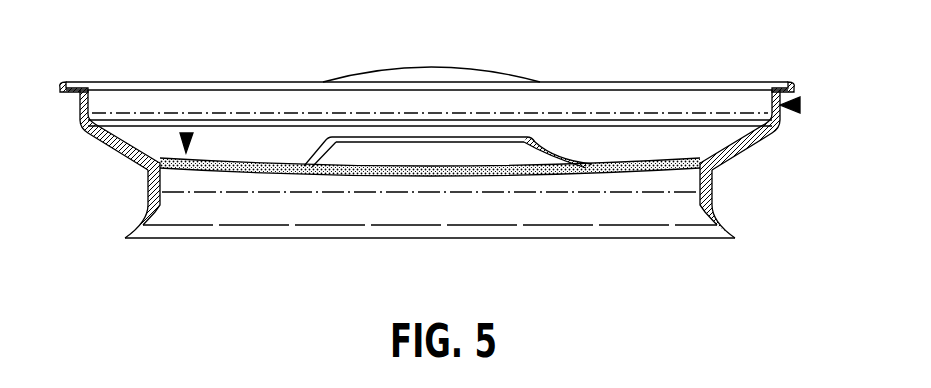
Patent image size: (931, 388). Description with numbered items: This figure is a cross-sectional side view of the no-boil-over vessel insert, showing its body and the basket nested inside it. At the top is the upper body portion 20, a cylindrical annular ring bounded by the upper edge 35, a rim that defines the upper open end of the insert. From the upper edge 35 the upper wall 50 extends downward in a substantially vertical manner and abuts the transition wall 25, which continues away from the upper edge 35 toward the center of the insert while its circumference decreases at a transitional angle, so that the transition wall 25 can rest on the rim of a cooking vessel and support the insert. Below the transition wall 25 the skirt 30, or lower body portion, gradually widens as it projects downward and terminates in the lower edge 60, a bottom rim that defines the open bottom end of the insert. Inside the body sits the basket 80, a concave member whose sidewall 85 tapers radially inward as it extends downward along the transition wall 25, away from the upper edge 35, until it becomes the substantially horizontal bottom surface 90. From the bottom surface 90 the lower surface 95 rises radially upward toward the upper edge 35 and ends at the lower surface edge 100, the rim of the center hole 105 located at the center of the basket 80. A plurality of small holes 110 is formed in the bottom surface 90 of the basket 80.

The upper body portion 20 is at (801, 106).
The transition wall 25 is at (124, 149).
The skirt 30 is at (707, 190).
The upper edge 35 is at (784, 80).
The upper wall 50 is at (82, 105).
The lower edge 60 is at (731, 241).
The basket 80 is at (188, 131).
The sidewall 85 is at (134, 150).
The bottom surface 90 is at (228, 200).
The lower surface 95 is at (333, 148).
The lower surface edge 100 is at (357, 136).
The center hole 105 is at (426, 136).
The small holes 110 is at (633, 164).